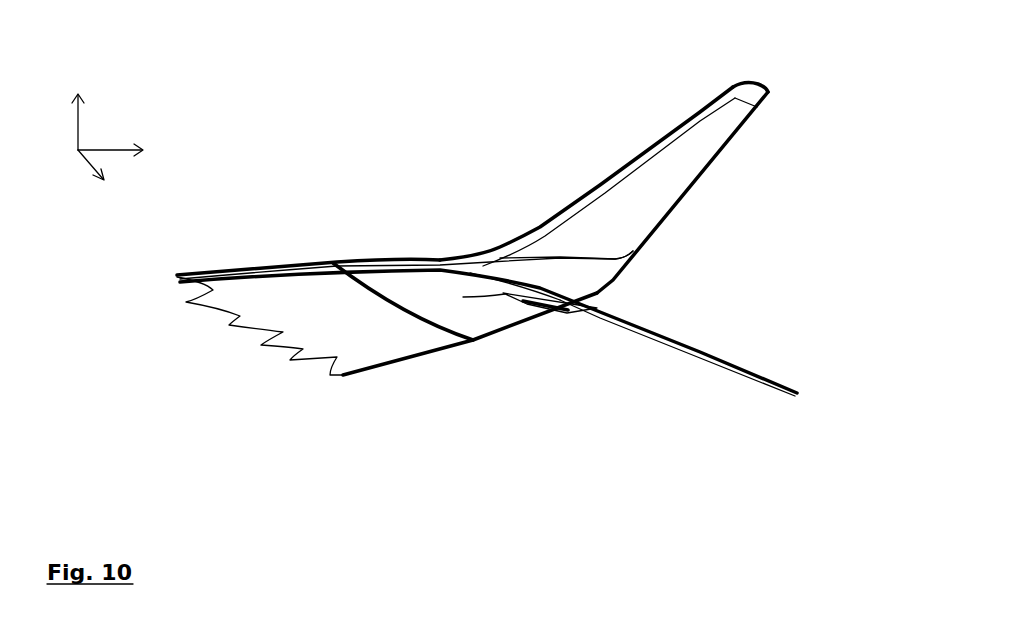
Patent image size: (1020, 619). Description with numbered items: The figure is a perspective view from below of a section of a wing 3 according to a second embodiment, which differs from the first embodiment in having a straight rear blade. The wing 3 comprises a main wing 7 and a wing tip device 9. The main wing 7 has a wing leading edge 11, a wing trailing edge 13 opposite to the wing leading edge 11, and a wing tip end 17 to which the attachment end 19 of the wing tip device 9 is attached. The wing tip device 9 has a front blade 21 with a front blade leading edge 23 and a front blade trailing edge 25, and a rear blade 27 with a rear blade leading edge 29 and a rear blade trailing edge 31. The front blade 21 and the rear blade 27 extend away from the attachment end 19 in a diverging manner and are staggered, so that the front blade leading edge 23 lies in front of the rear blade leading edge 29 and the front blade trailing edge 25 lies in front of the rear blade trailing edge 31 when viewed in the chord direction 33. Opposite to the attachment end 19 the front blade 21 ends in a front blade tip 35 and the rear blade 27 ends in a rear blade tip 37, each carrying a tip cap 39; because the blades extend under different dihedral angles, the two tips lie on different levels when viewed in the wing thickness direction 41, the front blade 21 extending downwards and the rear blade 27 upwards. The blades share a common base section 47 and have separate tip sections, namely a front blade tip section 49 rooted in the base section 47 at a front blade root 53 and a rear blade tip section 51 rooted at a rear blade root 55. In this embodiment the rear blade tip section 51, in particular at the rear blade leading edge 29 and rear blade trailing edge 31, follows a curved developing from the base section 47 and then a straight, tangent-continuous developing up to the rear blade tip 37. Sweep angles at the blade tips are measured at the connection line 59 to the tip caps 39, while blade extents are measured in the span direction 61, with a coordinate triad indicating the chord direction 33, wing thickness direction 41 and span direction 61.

The wing 3 is at (311, 168).
The main wing 7 is at (300, 318).
The wing tip device 9 is at (543, 160).
The wing leading edge 11 is at (233, 270).
The wing trailing edge 13 is at (370, 374).
The wing tip end 17 is at (340, 295).
The attachment end 19 is at (387, 283).
The front blade 21 is at (643, 337).
The front blade leading edge 23 is at (714, 352).
The front blade trailing edge 25 is at (603, 313).
The rear blade 27 is at (617, 222).
The rear blade leading edge 29 is at (673, 132).
The rear blade trailing edge 31 is at (670, 210).
The chord direction 33 is at (104, 181).
The front blade tip 35 is at (767, 398).
The rear blade tip 37 is at (710, 77).
The tip cap 39 is at (763, 87).
The wing thickness direction 41 is at (80, 109).
The base section 47 is at (436, 300).
The front blade tip section 49 is at (700, 354).
The rear blade tip section 51 is at (657, 173).
The front blade root 53 is at (461, 280).
The rear blade root 55 is at (492, 318).
The connection line 59 is at (750, 107).
The span direction 61 is at (127, 155).